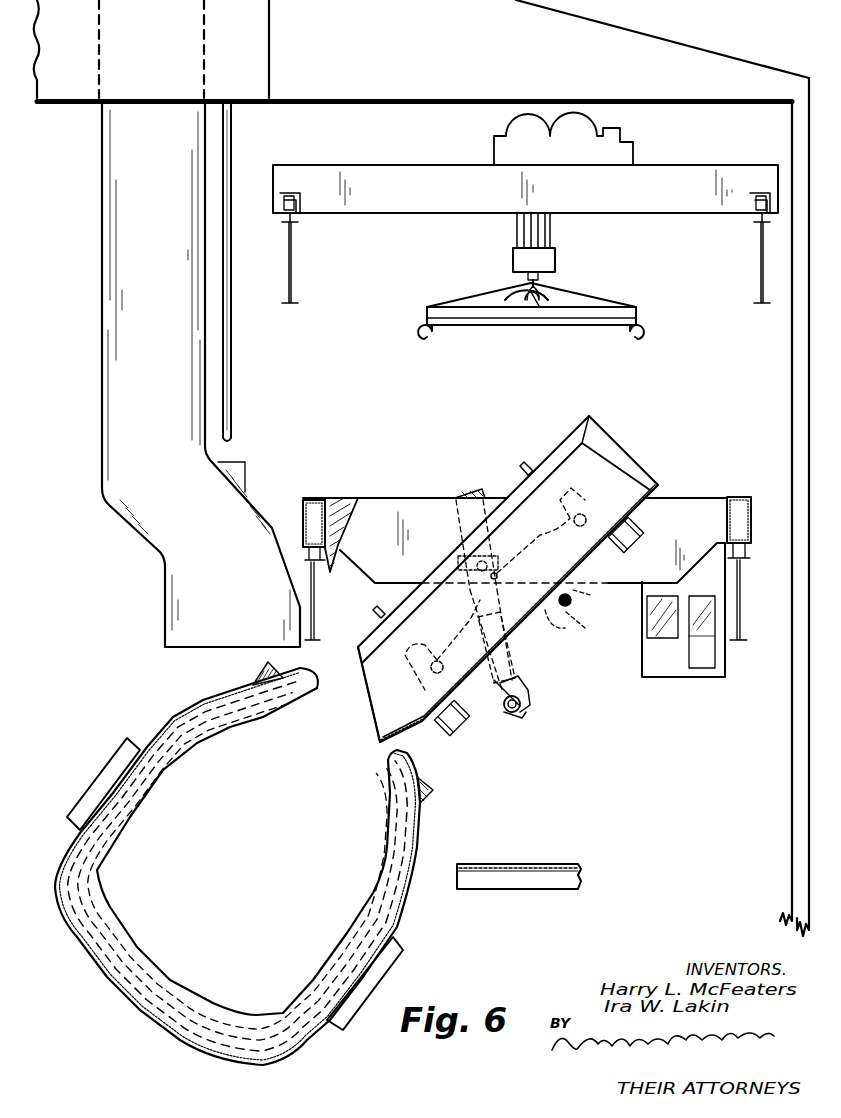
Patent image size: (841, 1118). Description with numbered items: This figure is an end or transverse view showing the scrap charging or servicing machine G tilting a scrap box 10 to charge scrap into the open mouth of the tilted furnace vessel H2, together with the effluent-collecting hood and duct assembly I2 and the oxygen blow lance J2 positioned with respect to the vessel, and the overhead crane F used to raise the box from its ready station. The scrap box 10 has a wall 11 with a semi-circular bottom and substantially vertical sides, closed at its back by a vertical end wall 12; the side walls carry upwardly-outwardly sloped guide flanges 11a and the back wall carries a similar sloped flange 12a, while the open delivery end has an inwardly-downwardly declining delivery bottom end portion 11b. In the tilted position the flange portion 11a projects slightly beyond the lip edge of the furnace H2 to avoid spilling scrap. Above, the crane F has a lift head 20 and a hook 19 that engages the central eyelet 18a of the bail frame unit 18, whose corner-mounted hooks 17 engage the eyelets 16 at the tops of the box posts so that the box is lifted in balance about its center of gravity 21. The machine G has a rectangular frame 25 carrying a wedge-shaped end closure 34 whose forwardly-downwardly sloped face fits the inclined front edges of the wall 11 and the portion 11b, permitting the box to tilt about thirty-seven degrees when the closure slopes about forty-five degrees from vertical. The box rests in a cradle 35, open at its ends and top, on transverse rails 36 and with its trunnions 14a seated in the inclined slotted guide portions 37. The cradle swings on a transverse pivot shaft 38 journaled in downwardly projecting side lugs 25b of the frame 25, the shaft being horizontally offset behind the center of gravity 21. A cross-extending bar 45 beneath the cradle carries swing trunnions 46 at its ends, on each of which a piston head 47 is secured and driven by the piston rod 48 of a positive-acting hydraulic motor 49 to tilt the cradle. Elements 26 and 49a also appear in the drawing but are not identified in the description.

The scrap box 10 is at (495, 580).
The wall 11 is at (372, 698).
The guide flanges 11a is at (364, 640).
The delivery bottom end portion 11b is at (406, 736).
The end wall 12 is at (606, 457).
The sloped flange 12a is at (582, 422).
The trunnions 14a is at (586, 502).
The hook eyelet 16 is at (529, 463).
The hooks 17 is at (424, 338).
The bail frame unit 18 is at (616, 305).
The central eyelet 18a is at (545, 302).
The hook 19 is at (515, 300).
The lift head 20 is at (556, 264).
The center of gravity 21 is at (498, 576).
The frame 25 is at (309, 500).
The side lugs 25b is at (593, 625).
The hanger 26 is at (746, 552).
The end closure 34 is at (338, 500).
The cradle 35 is at (594, 595).
The transverse rails 36 is at (640, 536).
The slotted guide portions 37 is at (495, 581).
The pivot shaft 38 is at (570, 594).
The bar 45 is at (524, 713).
The swing trunnions 46 is at (506, 712).
The piston head 47 is at (528, 694).
The piston rod 48 is at (520, 665).
The hydraulic motor 49 is at (468, 490).
The actuator rod 49a is at (456, 552).
The overhead crane F is at (525, 207).
The charging machine G is at (718, 496).
The furnace vessel H2 is at (80, 957).
The hood and duct assembly I2 is at (100, 252).
The oxygen blow lance J2 is at (232, 332).